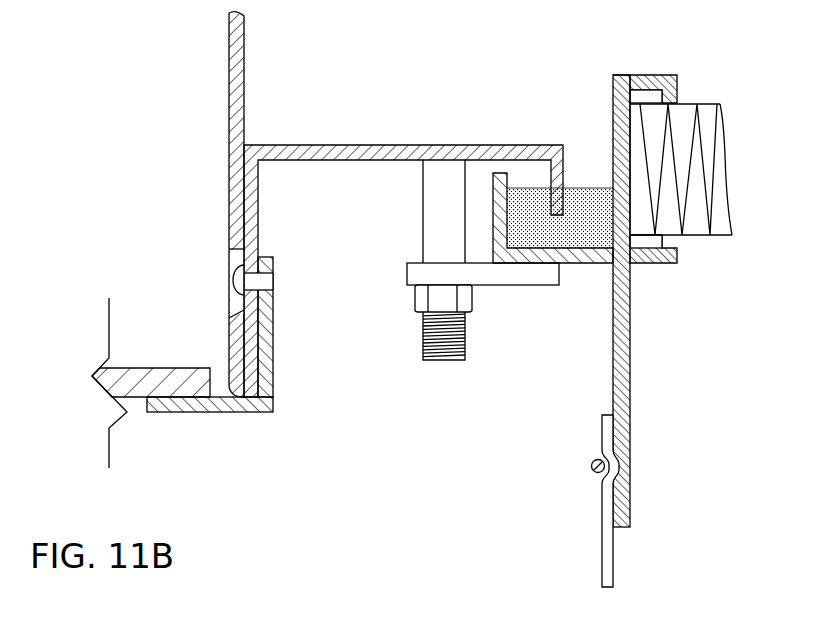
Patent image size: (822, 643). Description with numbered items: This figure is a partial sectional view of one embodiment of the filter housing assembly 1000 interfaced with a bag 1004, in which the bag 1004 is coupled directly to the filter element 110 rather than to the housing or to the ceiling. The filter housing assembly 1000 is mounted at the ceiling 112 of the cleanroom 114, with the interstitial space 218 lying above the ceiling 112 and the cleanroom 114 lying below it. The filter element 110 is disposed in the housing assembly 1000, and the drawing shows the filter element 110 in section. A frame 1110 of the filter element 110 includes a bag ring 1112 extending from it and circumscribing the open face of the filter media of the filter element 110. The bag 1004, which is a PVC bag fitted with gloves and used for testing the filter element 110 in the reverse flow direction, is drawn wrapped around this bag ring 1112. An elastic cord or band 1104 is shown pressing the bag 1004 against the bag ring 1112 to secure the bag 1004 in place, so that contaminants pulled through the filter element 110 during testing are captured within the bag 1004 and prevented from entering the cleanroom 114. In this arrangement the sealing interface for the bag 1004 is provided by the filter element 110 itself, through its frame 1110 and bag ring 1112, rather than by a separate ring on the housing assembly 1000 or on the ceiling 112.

The filter housing assembly 1000 is at (208, 108).
The interstitial space 218 is at (121, 188).
The ceiling 112 is at (184, 368).
The filter element 110 is at (692, 96).
The frame 1110 is at (662, 264).
The bag ring 1112 is at (632, 439).
The cleanroom 114 is at (773, 503).
The bag 1004 is at (613, 573).
The elastic cord or band 1104 is at (591, 463).